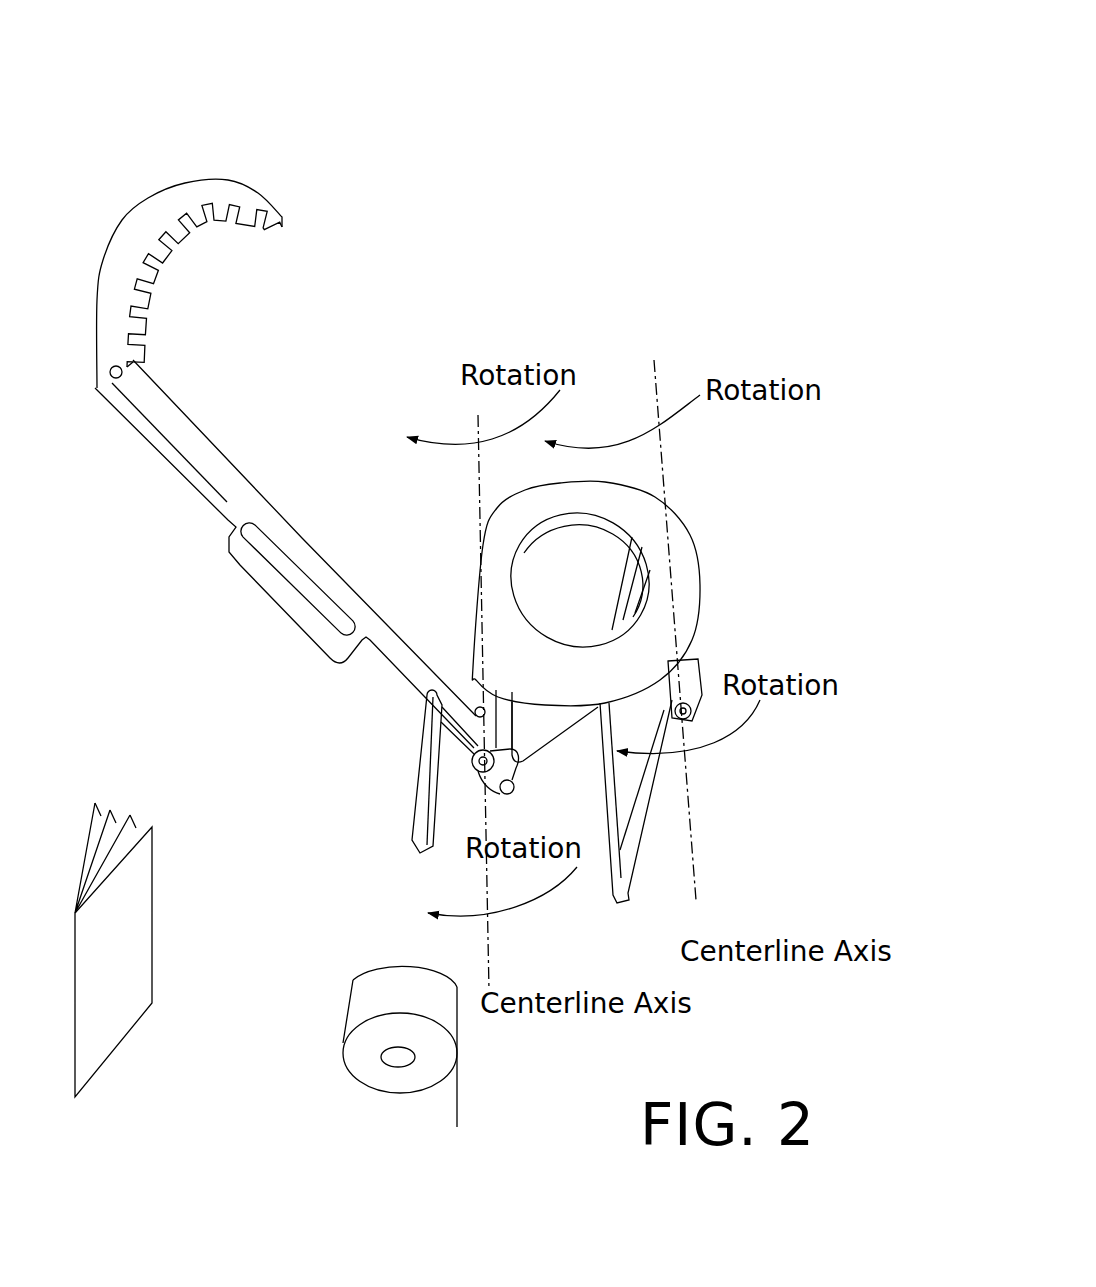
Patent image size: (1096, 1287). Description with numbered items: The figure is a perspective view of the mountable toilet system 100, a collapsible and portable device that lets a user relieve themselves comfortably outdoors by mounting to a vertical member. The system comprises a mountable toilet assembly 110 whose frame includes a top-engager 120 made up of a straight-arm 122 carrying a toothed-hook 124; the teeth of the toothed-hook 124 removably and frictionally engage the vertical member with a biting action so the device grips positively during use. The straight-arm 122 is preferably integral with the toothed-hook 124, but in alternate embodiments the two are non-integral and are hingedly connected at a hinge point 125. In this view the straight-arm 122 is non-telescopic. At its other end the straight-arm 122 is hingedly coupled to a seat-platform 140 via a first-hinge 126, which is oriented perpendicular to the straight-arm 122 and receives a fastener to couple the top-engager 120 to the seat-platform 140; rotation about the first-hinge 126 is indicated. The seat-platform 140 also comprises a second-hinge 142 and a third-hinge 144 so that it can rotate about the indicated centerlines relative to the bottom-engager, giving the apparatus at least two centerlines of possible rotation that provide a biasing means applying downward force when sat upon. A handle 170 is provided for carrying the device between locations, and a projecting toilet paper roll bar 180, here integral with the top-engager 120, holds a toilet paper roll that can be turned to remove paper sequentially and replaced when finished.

The mountable toilet system 100 is at (652, 110).
The mountable toilet assembly 110 is at (713, 480).
The top-engager 120 is at (228, 178).
The straight-arm 122 is at (215, 448).
The toothed-hook 124 is at (181, 260).
The hinge point 125 is at (110, 375).
The first-hinge 126 is at (487, 738).
The seat-platform 140 is at (647, 692).
The second-hinge 142 is at (691, 692).
The third-hinge 144 is at (655, 537).
The handle 170 is at (270, 558).
The projecting toilet paper roll bar 180 is at (417, 757).